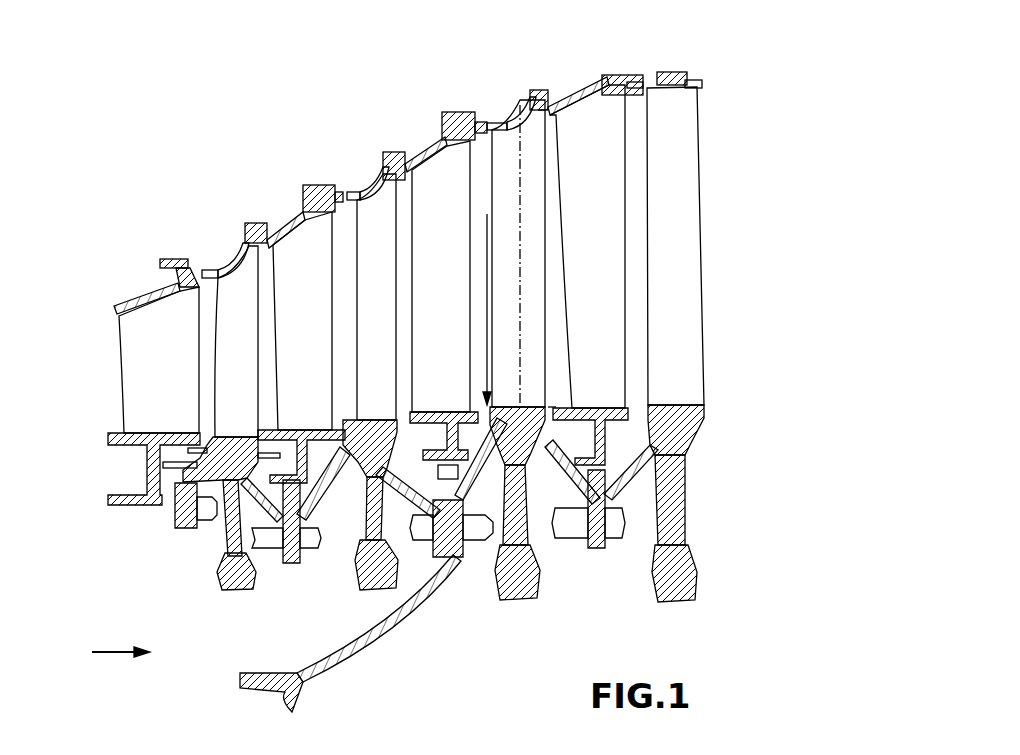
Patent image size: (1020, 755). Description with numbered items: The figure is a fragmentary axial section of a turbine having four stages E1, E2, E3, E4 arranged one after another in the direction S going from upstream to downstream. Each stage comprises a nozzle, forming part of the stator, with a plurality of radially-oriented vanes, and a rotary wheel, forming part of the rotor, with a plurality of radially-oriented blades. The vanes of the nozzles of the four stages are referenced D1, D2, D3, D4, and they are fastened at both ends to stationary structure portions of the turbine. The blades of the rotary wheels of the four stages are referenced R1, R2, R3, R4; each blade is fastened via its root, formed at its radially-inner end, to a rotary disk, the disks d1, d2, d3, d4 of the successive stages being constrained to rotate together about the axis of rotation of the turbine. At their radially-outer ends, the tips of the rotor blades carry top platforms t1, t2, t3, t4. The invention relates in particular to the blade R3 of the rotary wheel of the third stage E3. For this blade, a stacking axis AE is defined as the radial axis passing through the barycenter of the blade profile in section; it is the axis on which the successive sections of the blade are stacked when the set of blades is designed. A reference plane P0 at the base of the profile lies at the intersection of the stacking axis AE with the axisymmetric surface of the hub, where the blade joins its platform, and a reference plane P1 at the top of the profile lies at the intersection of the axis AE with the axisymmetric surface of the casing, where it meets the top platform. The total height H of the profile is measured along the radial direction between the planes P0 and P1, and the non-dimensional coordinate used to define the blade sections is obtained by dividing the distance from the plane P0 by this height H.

The first stage E1 is at (255, 241).
The second stage E2 is at (405, 168).
The third stage E3 is at (548, 96).
The fourth stage E4 is at (700, 52).
The top platform t1 is at (240, 262).
The top platform t2 is at (384, 181).
The top platform t3 is at (538, 104).
The top platform t4 is at (690, 74).
The nozzle vane D1 is at (174, 373).
The rotary wheel blade R1 is at (251, 354).
The nozzle vane D2 is at (319, 333).
The rotary wheel blade R2 is at (389, 311).
The nozzle vane D3 is at (454, 288).
The rotary wheel blade R3 is at (537, 263).
The nozzle vane D4 is at (608, 248).
The rotary wheel blade R4 is at (690, 223).
The total height of the profile H is at (484, 218).
The stacking axis AE is at (522, 195).
The reference plane at the top of the profile P1 is at (540, 122).
The reference plane at the base of the profile P0 is at (550, 407).
The rotary disk d1 is at (217, 517).
The rotary disk d2 is at (353, 477).
The rotary disk d3 is at (500, 500).
The rotary disk d4 is at (677, 432).
The direction from upstream to downstream S is at (121, 642).